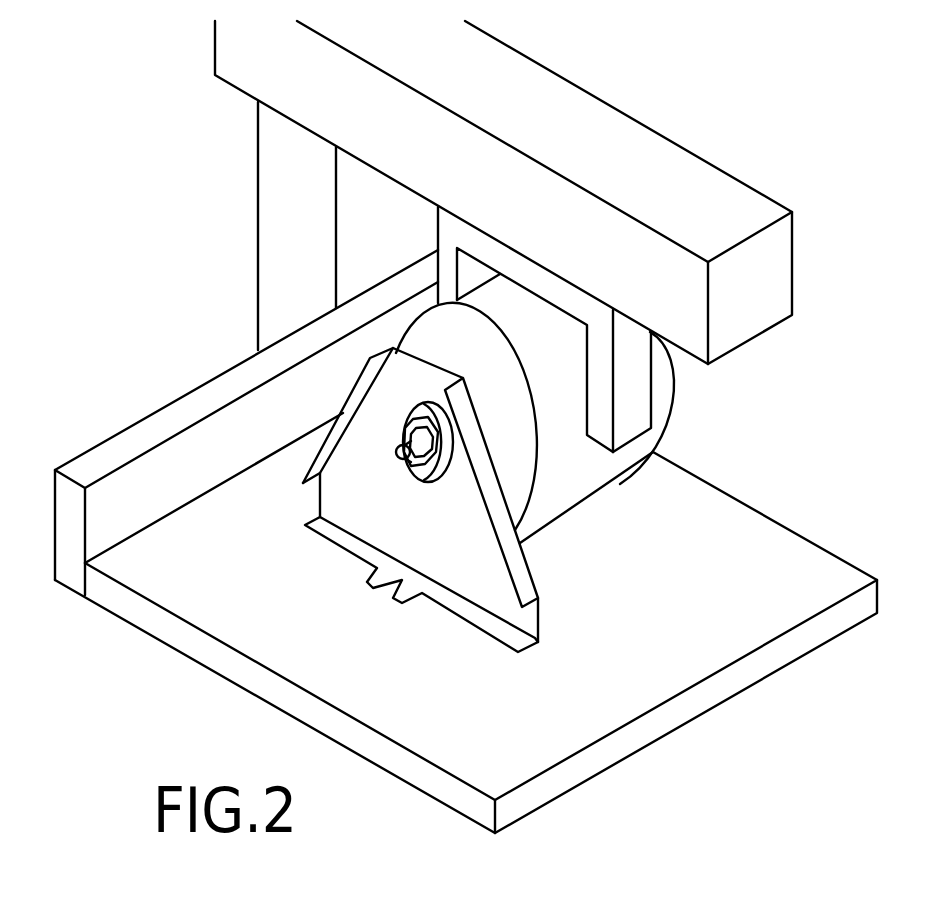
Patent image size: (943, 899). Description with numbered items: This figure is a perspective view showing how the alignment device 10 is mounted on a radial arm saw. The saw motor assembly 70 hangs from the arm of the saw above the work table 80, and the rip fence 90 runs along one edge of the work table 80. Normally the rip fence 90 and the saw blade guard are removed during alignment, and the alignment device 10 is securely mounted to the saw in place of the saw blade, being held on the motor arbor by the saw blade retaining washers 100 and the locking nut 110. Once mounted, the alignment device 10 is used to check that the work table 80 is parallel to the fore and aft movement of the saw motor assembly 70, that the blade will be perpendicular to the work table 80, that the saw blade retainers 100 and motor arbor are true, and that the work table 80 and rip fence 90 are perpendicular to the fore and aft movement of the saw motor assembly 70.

The alignment device 10 is at (540, 600).
The saw motor assembly 70 is at (570, 475).
The work table 80 is at (305, 643).
The rip fence 90 is at (123, 443).
The saw blade retainers 100 is at (415, 397).
The locking nut 110 is at (390, 440).